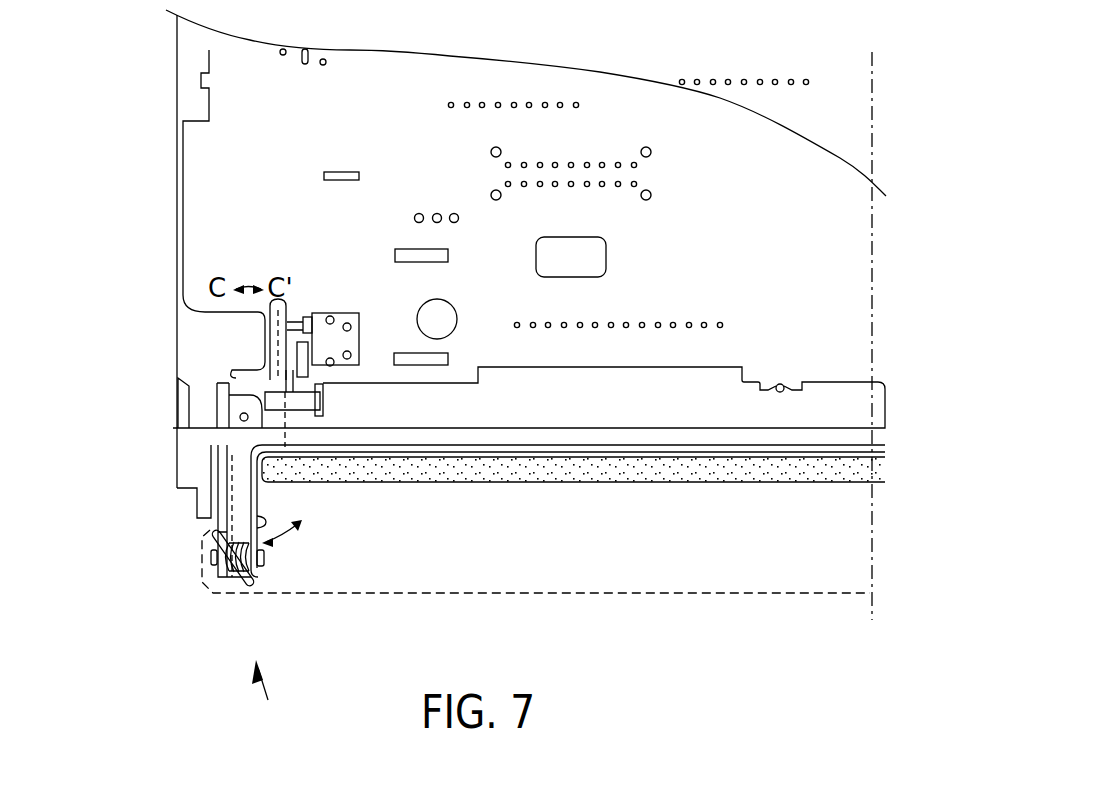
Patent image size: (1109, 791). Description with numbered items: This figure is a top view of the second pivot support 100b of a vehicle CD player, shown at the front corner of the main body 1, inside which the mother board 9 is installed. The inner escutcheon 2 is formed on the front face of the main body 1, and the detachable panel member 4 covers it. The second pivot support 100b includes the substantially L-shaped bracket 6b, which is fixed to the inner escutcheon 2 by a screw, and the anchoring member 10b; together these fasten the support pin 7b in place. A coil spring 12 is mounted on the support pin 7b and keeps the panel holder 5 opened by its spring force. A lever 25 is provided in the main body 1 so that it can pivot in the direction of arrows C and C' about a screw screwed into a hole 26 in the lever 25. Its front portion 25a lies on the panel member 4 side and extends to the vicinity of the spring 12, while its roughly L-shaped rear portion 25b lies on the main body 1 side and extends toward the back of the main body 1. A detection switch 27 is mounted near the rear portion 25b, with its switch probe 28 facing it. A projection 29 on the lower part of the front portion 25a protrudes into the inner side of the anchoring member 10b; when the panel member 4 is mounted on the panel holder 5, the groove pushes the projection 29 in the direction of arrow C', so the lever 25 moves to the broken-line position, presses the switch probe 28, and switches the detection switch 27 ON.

The main body 1 is at (192, 73).
The mother board 9 is at (198, 160).
The inner escutcheon 2 is at (185, 483).
The lever 25 is at (230, 372).
The front portion 25a is at (227, 480).
The rear portion 25b is at (268, 318).
The hole 26 is at (244, 417).
The detection switch 27 is at (343, 313).
The switch probe 28 is at (303, 318).
The anchoring member 10b is at (258, 503).
The panel holder 5 is at (432, 455).
The bracket 6b is at (210, 527).
The coil spring 12 is at (240, 580).
The support pin 7b is at (262, 586).
The projection 29 is at (265, 522).
The panel member 4 is at (345, 592).
The second pivot support 100b is at (251, 732).